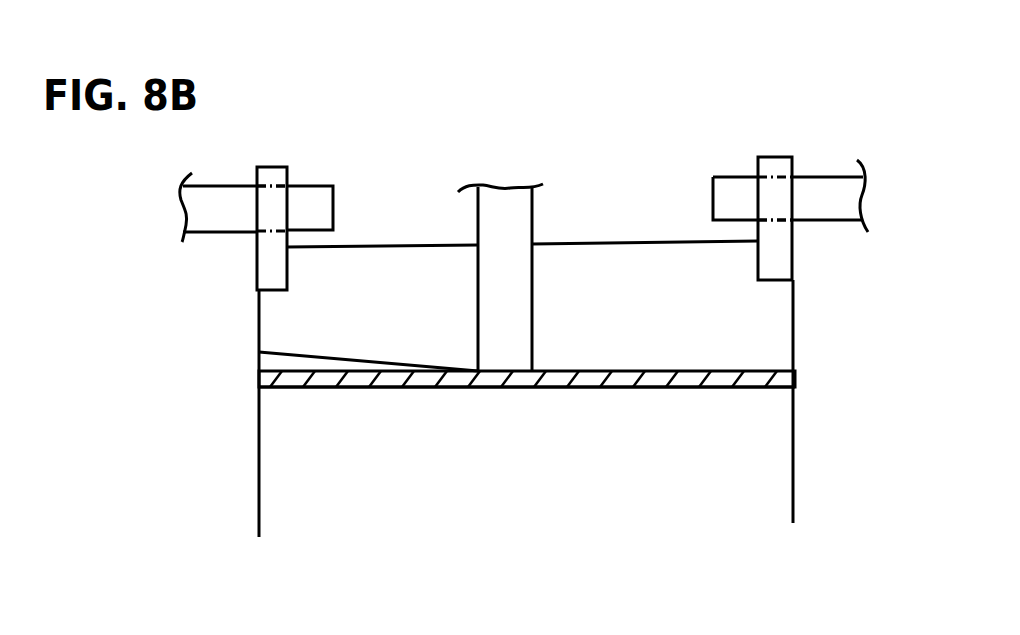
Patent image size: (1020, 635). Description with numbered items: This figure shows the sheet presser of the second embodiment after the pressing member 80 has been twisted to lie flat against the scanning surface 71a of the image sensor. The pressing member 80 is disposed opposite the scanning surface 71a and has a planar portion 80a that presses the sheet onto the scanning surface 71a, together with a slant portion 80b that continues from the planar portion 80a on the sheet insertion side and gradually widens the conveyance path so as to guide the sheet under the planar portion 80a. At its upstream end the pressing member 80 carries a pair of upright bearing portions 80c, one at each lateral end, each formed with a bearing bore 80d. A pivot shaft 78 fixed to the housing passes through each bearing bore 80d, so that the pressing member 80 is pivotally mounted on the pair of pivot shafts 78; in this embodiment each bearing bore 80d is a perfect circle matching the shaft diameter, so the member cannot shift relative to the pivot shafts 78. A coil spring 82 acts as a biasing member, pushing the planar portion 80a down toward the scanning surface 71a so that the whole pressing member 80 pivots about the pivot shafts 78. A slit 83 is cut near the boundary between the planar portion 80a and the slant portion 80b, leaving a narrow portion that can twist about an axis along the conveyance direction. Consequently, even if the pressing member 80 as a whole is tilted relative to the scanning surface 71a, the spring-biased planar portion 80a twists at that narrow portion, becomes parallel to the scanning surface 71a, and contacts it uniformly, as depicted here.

The pressing member 80 is at (539, 104).
The planar portion 80a is at (392, 390).
The slant portion 80b is at (607, 257).
The bearing portion 80c is at (273, 174).
The bearing bore 80d is at (270, 210).
The pivot shaft 78 is at (300, 193).
The coil spring 82 is at (522, 332).
The slit 83 is at (327, 369).
The scanning surface 71a is at (490, 390).